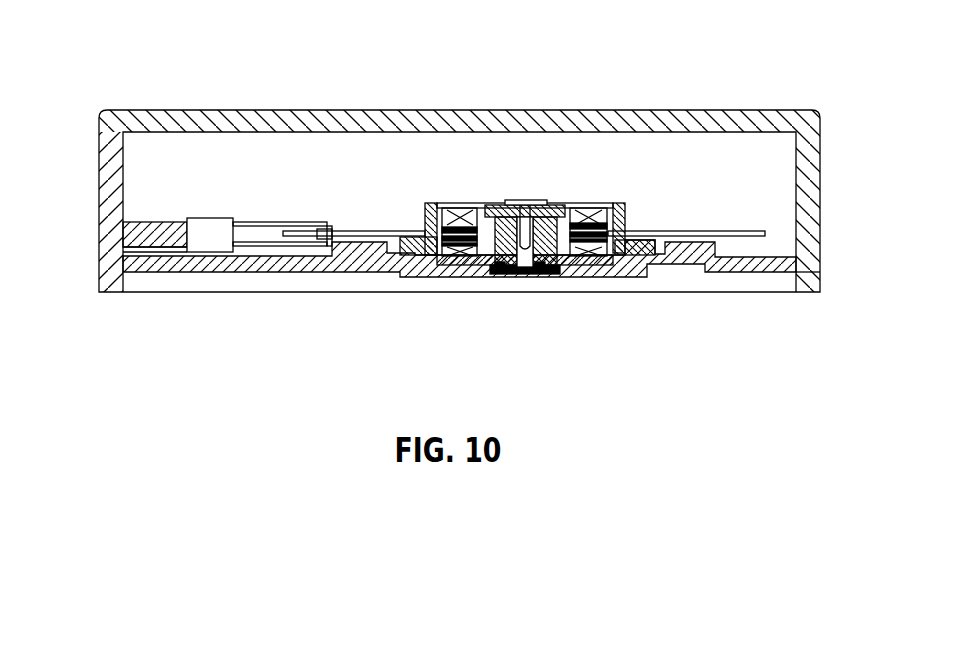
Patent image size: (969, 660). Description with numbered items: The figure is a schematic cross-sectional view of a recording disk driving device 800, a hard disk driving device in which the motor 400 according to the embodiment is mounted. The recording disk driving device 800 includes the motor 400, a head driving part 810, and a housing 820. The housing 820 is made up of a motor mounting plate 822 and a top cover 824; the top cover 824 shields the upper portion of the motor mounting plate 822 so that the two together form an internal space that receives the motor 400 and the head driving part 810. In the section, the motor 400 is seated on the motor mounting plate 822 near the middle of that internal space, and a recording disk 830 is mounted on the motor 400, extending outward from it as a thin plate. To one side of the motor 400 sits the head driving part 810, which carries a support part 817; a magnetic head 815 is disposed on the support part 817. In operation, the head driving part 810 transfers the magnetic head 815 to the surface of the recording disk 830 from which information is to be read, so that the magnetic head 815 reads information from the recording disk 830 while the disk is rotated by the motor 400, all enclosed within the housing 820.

The recording disk driving device 800 is at (482, 33).
The housing 820 is at (76, 136).
The top cover 824 is at (267, 127).
The motor mounting plate 822 is at (807, 273).
The head driving part 810 is at (205, 264).
The magnetic head 815 is at (330, 248).
The support part 817 is at (270, 247).
The recording disk 830 is at (732, 231).
The motor 400 is at (567, 180).